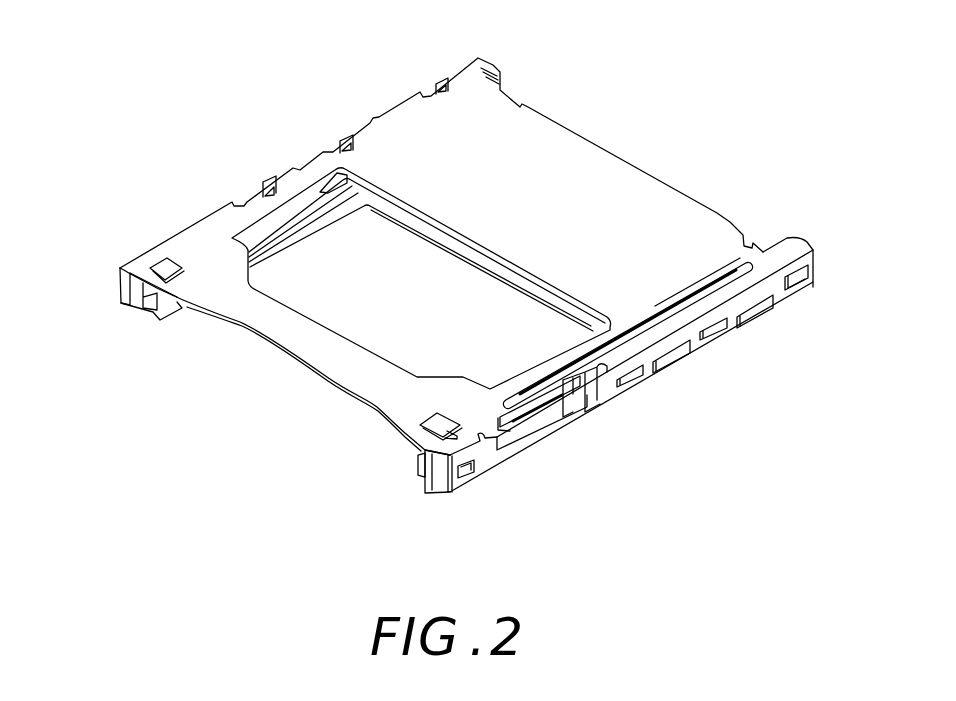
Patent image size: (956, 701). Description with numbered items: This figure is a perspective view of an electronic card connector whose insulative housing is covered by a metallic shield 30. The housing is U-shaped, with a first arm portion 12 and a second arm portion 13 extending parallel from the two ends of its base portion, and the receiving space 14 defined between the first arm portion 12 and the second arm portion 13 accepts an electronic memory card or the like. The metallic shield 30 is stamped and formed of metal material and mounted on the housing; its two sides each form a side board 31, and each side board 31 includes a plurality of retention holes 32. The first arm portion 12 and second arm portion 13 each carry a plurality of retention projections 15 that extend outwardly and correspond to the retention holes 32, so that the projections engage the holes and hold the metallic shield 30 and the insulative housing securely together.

The metallic shield 30 is at (383, 108).
The first arm portion 12 is at (122, 309).
The second arm portion 13 is at (440, 468).
The receiving space 14 is at (283, 360).
The retention projection 15 is at (788, 281).
The side board 31 is at (690, 333).
The retention hole 32 is at (800, 265).